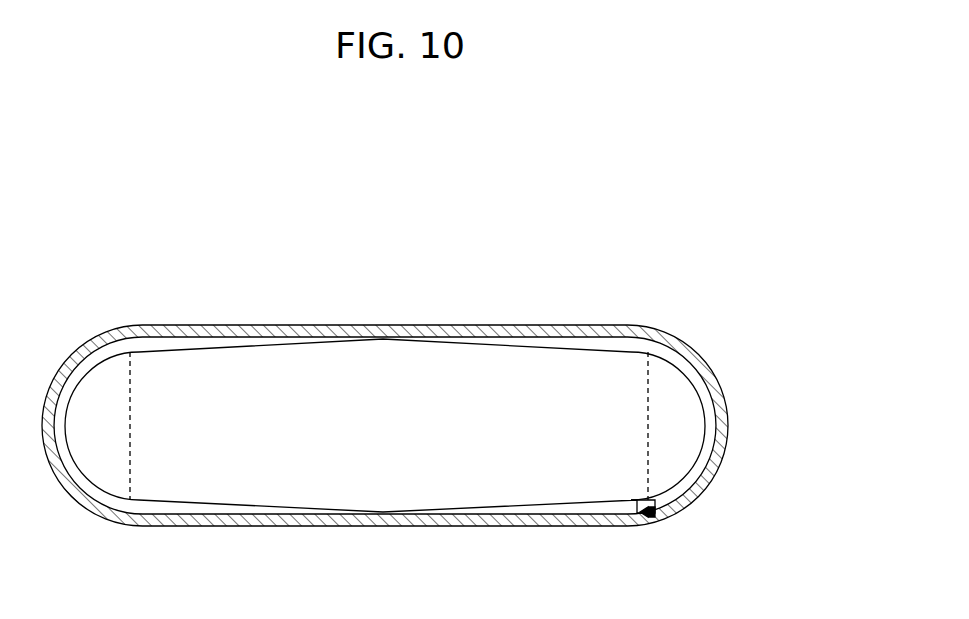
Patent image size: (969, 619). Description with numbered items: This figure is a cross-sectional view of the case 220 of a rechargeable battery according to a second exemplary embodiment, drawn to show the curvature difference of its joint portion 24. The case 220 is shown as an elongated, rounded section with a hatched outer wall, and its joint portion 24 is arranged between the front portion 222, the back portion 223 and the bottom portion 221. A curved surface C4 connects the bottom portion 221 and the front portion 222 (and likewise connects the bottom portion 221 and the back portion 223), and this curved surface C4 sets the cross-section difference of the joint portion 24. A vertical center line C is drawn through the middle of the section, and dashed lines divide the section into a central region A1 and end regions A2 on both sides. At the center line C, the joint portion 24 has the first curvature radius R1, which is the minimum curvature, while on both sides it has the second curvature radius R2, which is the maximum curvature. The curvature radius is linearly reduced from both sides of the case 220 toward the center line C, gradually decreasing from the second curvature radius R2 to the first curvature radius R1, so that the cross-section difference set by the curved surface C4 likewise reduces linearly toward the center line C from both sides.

The case 220 is at (412, 409).
The bottom portion 221 is at (147, 476).
The front portion 222 is at (560, 519).
The back portion 223 is at (558, 334).
The joint portion 24 is at (692, 483).
The center line C is at (383, 555).
The curved surface C4 is at (595, 341).
The central region A1 is at (438, 427).
The end region A2 is at (383, 426).
The first curvature radius R1 is at (386, 515).
The second curvature radius R2 is at (652, 512).